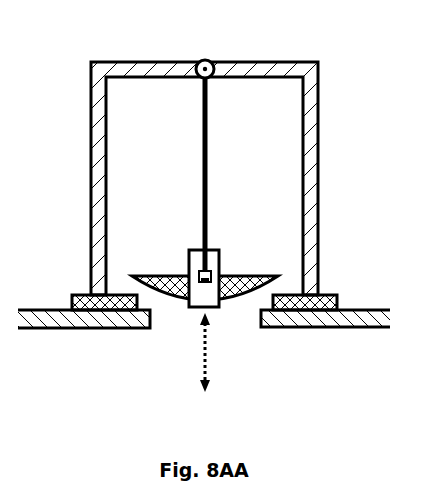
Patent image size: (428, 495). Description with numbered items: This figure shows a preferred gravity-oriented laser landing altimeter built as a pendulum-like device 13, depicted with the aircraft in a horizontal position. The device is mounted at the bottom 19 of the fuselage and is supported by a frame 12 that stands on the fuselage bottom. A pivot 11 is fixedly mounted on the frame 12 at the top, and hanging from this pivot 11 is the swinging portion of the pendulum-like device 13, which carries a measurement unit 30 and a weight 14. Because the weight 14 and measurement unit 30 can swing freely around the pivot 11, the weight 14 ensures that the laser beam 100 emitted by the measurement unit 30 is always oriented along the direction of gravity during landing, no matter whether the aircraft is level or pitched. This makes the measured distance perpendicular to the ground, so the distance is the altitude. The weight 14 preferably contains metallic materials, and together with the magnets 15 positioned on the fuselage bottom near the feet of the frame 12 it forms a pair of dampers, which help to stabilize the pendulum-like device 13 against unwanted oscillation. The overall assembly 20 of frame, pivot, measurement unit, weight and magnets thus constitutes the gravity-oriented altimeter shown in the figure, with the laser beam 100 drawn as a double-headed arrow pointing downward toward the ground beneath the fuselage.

The pivot 11 is at (212, 62).
The frame 12 is at (313, 185).
The pendulum-like device 13 is at (213, 160).
The weight 14 is at (242, 283).
The magnets 15 is at (318, 302).
The bottom of the fuselage 19 is at (323, 318).
The apparatus 20 is at (233, 166).
The measurement unit 30 is at (198, 258).
The laser beam 100 is at (205, 366).